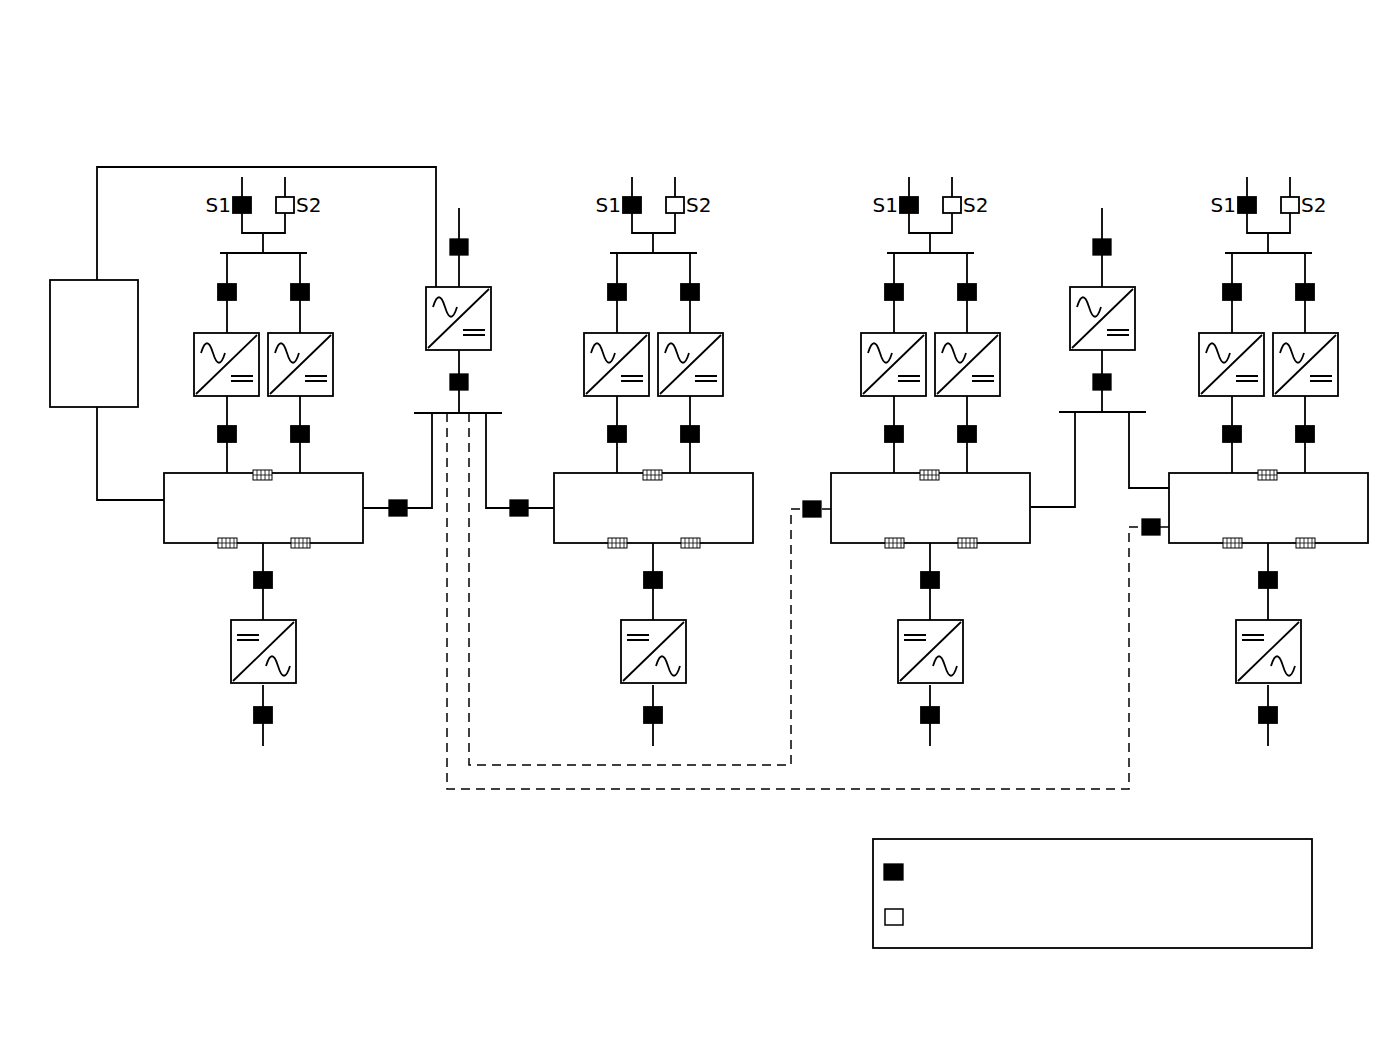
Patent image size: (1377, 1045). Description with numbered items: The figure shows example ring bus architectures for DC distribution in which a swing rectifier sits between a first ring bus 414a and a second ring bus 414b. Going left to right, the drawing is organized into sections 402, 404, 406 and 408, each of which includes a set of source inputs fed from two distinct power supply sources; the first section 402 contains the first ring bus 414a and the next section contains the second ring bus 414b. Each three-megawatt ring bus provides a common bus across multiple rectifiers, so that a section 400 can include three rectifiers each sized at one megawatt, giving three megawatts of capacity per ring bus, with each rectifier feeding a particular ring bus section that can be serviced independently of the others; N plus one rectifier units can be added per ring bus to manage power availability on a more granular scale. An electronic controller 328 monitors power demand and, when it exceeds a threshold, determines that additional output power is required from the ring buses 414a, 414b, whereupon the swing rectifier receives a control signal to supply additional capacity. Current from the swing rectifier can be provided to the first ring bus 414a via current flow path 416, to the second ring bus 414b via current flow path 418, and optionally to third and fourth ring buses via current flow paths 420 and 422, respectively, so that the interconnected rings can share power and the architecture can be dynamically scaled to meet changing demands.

The section 400 is at (418, 82).
The electronic controller 328 is at (82, 370).
The first section 402 is at (263, 158).
The section 404 is at (652, 171).
The section 406 is at (932, 171).
The section 408 is at (1262, 172).
The first ring bus 414a is at (225, 550).
The second ring bus 414b is at (615, 548).
The current flow path 416 is at (418, 505).
The current flow path 418 is at (493, 505).
The current flow path 420 is at (508, 765).
The current flow path 422 is at (480, 790).